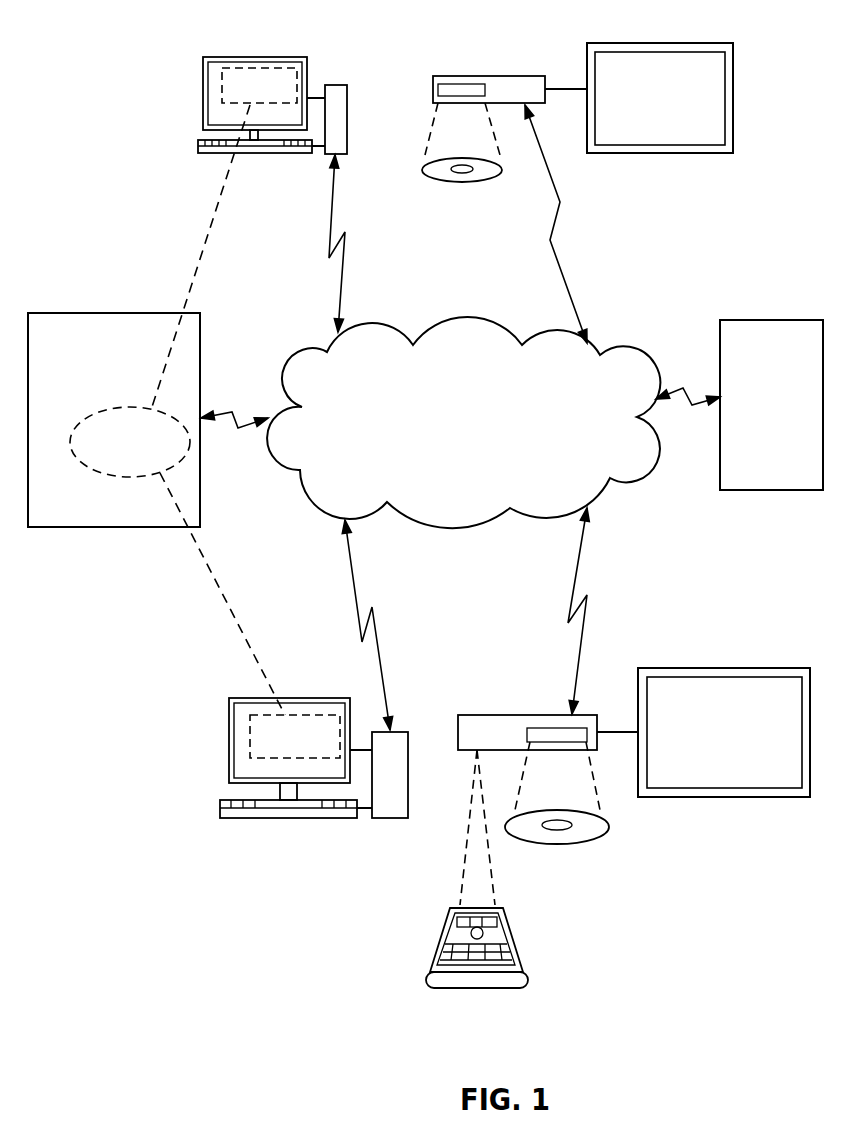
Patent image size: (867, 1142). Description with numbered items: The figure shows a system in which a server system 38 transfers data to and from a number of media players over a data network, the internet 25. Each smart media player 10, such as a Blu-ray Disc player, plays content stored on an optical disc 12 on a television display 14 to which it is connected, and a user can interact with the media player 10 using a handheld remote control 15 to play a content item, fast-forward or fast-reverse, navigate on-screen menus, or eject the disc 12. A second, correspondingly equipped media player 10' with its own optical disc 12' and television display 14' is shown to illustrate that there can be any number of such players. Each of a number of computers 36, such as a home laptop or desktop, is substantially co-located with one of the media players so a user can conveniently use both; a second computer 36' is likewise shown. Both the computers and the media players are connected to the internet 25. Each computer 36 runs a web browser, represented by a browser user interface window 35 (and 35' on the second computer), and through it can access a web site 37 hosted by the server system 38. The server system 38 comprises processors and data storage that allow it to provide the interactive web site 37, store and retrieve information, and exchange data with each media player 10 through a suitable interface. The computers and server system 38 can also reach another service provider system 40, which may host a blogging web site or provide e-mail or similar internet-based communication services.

The media player 10 is at (548, 708).
The media player 10' is at (510, 61).
The optical disc 12 is at (572, 807).
The optical disc 12' is at (462, 163).
The television display 14 is at (724, 760).
The television display 14' is at (660, 124).
The handheld remote control 15 is at (523, 955).
The internet 25 is at (307, 497).
The browser user interface window 35 is at (256, 748).
The browser user interface window 35' is at (216, 106).
The computer 36 is at (290, 758).
The computer 36' is at (241, 102).
The web site 37 is at (108, 473).
The server system 38 is at (113, 313).
The other service provider system 40 is at (778, 320).